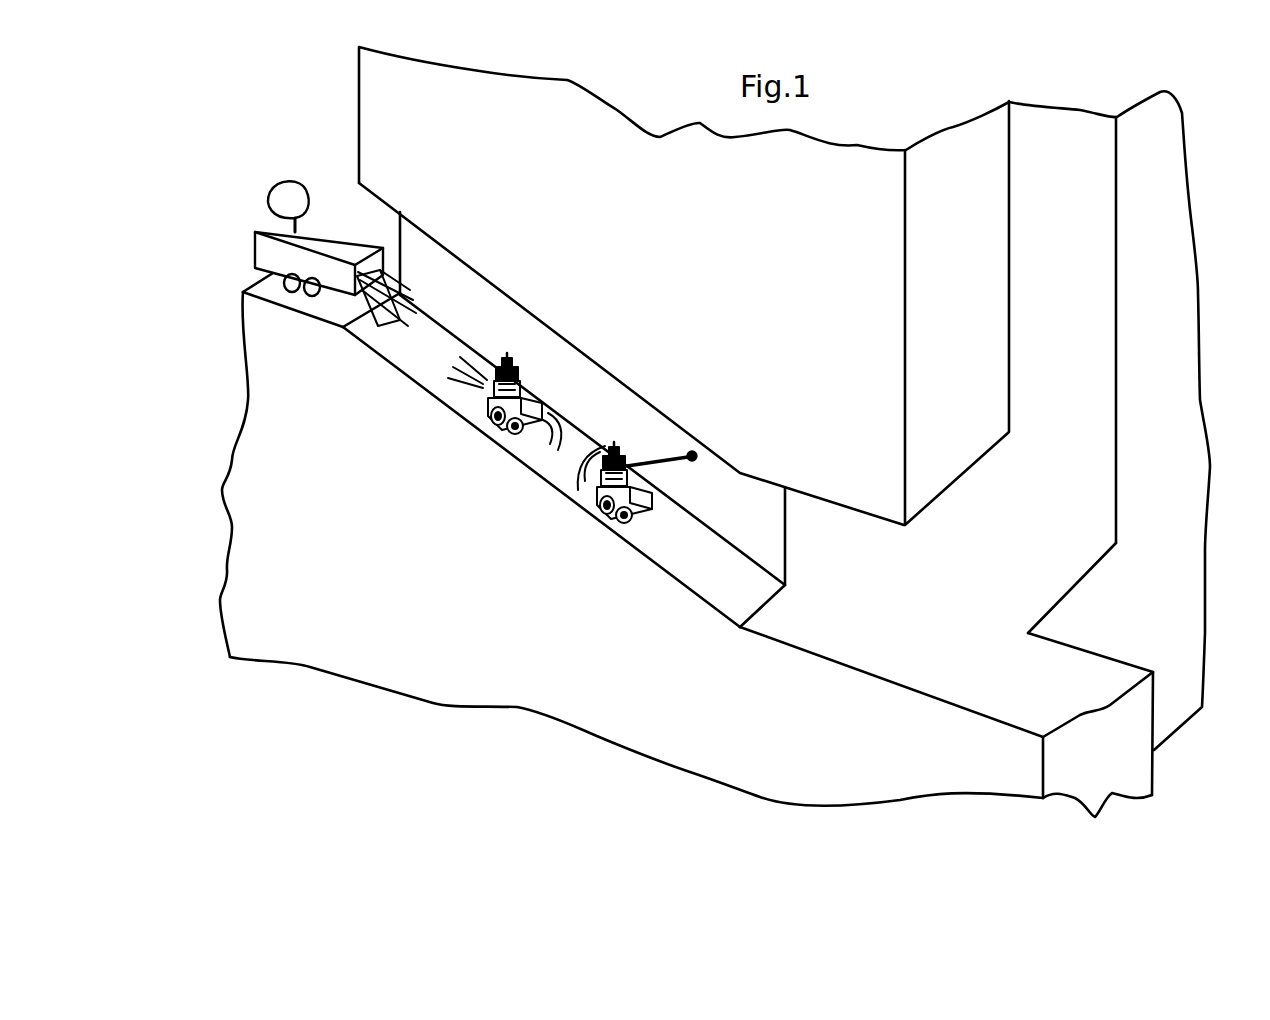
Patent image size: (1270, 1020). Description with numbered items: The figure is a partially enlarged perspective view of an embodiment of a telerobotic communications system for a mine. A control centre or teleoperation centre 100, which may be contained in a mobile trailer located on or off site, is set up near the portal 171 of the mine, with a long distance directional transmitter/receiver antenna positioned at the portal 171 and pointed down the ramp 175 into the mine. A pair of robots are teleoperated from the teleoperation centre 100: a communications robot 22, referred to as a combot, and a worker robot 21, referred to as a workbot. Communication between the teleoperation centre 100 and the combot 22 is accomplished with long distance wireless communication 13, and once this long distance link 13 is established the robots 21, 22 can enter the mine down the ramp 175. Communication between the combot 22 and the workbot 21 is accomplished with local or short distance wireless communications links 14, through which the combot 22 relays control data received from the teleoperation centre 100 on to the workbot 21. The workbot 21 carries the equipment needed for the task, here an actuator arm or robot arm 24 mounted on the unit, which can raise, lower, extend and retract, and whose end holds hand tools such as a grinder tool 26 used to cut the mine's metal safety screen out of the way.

The portal 171 is at (377, 217).
The ramp 175 is at (698, 582).
The teleoperation centre 100 is at (293, 259).
The long distance wireless communication 13 is at (375, 307).
The communications robot 22 is at (490, 418).
The worker robot 21 is at (600, 510).
The actuator arm 24 is at (669, 470).
The grinder tool 26 is at (698, 453).
The short distance wireless communications link 14 is at (568, 445).